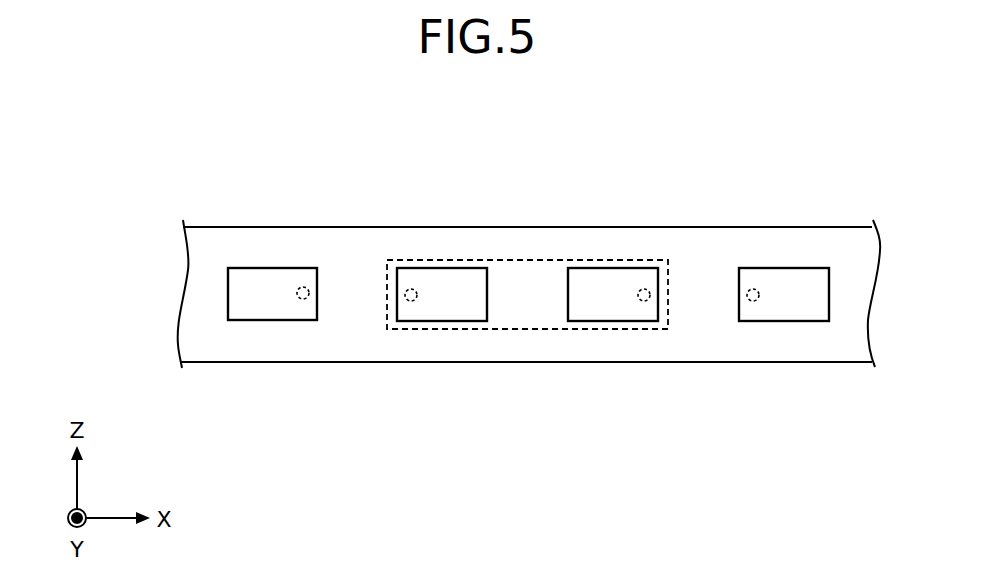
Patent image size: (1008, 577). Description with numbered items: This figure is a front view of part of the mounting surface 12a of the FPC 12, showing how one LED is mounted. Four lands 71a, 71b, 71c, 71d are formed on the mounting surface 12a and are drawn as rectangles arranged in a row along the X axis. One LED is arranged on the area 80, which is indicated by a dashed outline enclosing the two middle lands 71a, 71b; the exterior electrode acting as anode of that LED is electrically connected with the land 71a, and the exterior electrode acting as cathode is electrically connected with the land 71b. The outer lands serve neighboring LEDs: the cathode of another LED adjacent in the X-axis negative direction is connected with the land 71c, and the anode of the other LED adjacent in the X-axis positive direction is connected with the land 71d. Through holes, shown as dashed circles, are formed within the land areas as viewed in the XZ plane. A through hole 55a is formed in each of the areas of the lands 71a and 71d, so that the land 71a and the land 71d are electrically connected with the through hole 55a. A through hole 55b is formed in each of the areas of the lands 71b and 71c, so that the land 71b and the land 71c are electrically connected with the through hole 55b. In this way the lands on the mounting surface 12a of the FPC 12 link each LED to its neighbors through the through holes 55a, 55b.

The FPC 12 is at (711, 166).
The mounting surface 12a is at (205, 237).
The land 71a is at (443, 277).
The land 71b is at (612, 277).
The land 71c is at (270, 277).
The land 71d is at (784, 277).
The through hole 55a is at (412, 301).
The through hole 55b is at (298, 299).
The area 80 is at (535, 330).